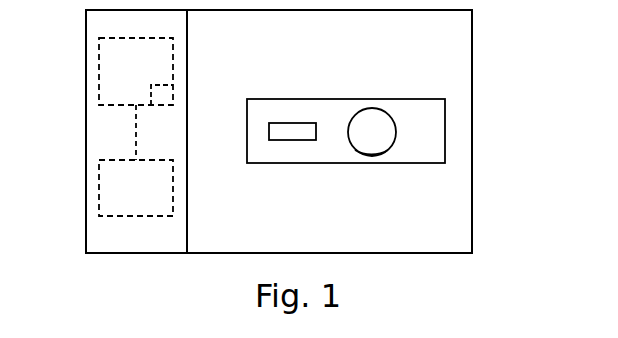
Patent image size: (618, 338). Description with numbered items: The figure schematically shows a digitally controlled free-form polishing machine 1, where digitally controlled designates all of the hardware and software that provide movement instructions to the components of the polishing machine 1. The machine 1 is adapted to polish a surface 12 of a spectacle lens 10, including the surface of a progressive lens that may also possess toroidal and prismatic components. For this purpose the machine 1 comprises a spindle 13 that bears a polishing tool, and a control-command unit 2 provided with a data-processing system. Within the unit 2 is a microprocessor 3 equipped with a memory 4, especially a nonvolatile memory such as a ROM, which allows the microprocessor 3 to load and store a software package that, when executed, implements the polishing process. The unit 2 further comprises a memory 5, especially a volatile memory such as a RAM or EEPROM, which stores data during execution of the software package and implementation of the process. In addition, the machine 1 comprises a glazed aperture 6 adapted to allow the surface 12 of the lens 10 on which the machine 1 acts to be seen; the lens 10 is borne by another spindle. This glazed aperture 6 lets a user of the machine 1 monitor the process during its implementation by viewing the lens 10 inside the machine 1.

The free-form polishing machine 1 is at (472, 58).
The control-command unit 2 is at (105, 240).
The microprocessor 3 is at (100, 72).
The memory 4 is at (173, 95).
The memory 5 is at (105, 172).
The glazed aperture 6 is at (435, 137).
The spectacle lens 10 is at (385, 155).
The surface 12 is at (362, 142).
The spindle 13 is at (292, 131).